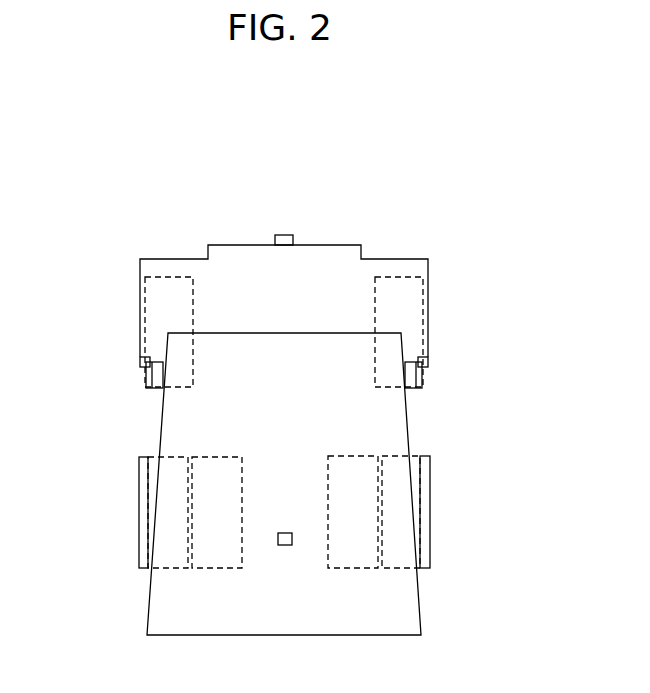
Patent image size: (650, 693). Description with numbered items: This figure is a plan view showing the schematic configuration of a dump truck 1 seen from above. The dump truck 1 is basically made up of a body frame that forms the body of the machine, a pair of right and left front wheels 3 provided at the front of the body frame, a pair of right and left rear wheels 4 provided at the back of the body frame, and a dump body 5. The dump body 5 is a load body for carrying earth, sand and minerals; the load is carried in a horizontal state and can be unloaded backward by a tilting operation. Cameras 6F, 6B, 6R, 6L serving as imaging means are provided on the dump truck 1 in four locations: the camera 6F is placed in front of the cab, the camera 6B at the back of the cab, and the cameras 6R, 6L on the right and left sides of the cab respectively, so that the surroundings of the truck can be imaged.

The dump truck 1 is at (381, 204).
The front wheel 3 is at (145, 380).
The rear wheel 4 is at (148, 502).
The dump body 5 is at (228, 336).
The camera 6F is at (278, 235).
The camera 6B is at (290, 545).
The camera 6L is at (142, 360).
The camera 6R is at (430, 363).